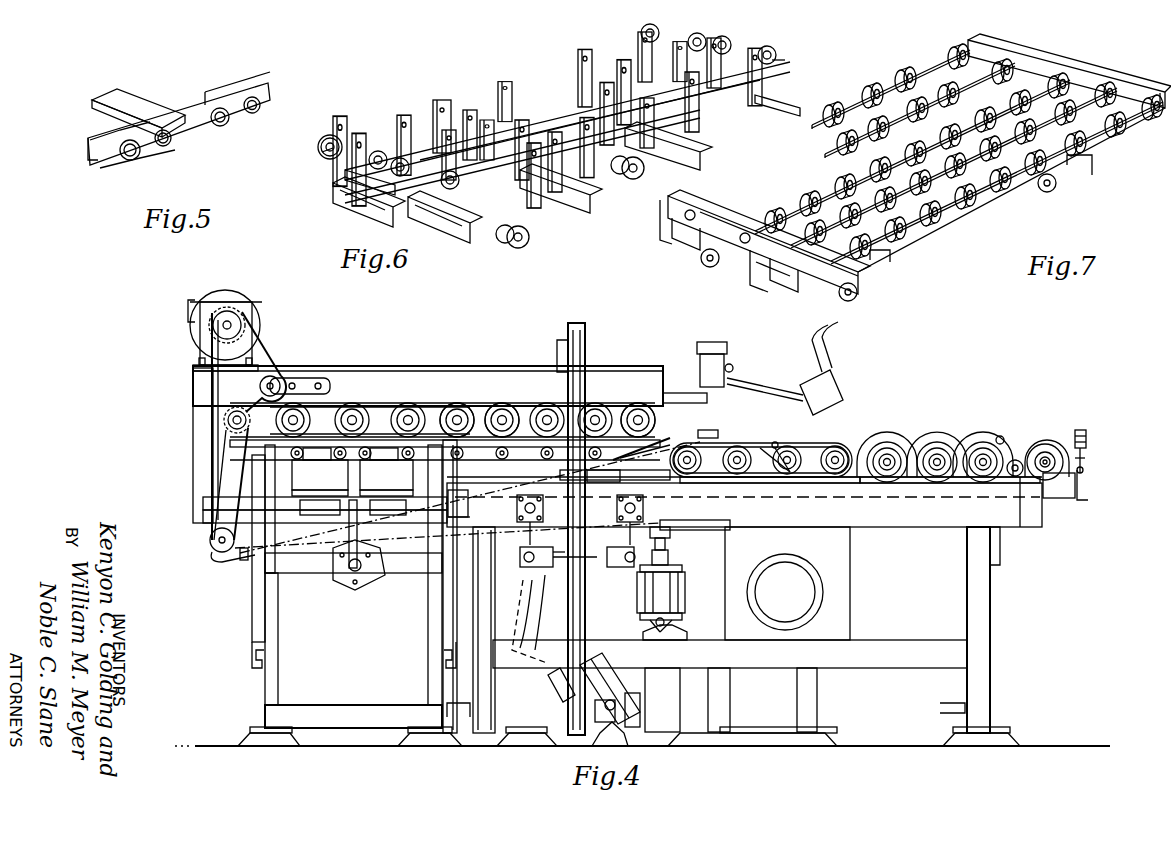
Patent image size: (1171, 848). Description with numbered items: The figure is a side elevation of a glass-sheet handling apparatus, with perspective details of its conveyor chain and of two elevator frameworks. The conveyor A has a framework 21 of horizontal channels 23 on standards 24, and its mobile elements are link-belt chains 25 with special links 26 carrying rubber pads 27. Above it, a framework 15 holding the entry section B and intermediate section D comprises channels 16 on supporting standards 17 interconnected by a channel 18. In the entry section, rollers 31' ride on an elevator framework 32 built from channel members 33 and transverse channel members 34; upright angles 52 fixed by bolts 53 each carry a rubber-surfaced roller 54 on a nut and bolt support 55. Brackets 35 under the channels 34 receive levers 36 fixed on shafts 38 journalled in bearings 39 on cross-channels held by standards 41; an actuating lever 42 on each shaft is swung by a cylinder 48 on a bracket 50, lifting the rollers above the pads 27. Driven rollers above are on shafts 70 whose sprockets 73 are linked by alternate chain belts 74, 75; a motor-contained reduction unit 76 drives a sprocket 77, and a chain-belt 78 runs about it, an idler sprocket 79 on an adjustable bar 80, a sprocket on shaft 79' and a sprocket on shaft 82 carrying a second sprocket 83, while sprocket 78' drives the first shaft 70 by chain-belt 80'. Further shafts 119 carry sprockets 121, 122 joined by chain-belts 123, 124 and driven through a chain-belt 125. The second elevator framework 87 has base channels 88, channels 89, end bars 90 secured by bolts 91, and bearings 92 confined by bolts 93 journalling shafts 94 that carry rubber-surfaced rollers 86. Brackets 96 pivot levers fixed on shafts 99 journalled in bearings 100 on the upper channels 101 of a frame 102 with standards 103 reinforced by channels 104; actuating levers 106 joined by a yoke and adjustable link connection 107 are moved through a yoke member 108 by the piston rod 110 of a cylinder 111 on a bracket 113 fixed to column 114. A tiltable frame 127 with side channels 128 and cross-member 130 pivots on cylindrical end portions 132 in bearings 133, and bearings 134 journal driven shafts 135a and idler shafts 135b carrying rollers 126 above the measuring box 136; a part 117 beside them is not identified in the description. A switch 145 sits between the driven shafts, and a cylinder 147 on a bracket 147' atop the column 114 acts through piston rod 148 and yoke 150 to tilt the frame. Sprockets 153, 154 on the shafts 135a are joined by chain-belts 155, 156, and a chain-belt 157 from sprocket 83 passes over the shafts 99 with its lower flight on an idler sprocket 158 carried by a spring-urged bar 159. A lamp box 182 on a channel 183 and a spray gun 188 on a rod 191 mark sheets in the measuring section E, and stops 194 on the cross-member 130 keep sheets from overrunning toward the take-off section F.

In FIG. 5, the link-belt chains 25 is at (200, 130).
In FIG. 4, the link-belt chains 25 is at (458, 516).
In FIG. 5, the special links 26 is at (115, 126).
In FIG. 5, the pads 27 is at (137, 103).
In FIG. 6, the rollers 31' is at (330, 110).
In FIG. 6, the elevator framework 32 is at (442, 96).
In FIG. 4, the elevator framework 32 is at (225, 505).
In FIG. 6, the channel members 33 is at (350, 198).
In FIG. 6, the channel members 34 is at (540, 196).
In FIG. 6, the brackets 35 is at (522, 246).
In FIG. 6, the upright angles 52 is at (360, 138).
In FIG. 6, the bolts 53 is at (350, 180).
In FIG. 6, the rubber-surface ball-bearing roller 54 is at (340, 135).
In FIG. 4, the rubber-surface ball-bearing roller 54 is at (290, 452).
In FIG. 6, the nut and bolt support 55 is at (326, 153).
In FIG. 7, the rubber-surfaced rollers 86 is at (840, 102).
In FIG. 4, the rubber-surfaced rollers 86 is at (548, 436).
In FIG. 7, the framework 87 is at (985, 255).
In FIG. 4, the framework 87 is at (640, 455).
In FIG. 7, the base channels 88 is at (890, 258).
In FIG. 7, the channels 89 is at (685, 243).
In FIG. 7, the bars 90 is at (1158, 88).
In FIG. 4, the bars 90 is at (470, 485).
In FIG. 7, the bolts 91 is at (662, 213).
In FIG. 7, the bearings 92 is at (695, 210).
In FIG. 7, the bolts 93 is at (768, 276).
In FIG. 7, the shafts 94 is at (826, 152).
In FIG. 7, the brackets 96 is at (852, 300).
In FIG. 4, the framework 15 is at (470, 366).
In FIG. 4, the channels 16 is at (412, 366).
In FIG. 4, the supporting standards 17 is at (585, 598).
In FIG. 4, the channel 18 is at (565, 336).
In FIG. 4, the framework 21 is at (265, 683).
In FIG. 4, the channels 23 is at (252, 655).
In FIG. 4, the standards 24 is at (278, 662).
In FIG. 4, the levers 36 is at (322, 515).
In FIG. 4, the shafts 38 is at (300, 496).
In FIG. 4, the bearings 39 is at (225, 520).
In FIG. 4, the standards 41 is at (265, 620).
In FIG. 4, the actuating lever 42 is at (358, 537).
In FIG. 4, the cylinder 48 is at (355, 590).
In FIG. 4, the bracket 50 is at (290, 565).
In FIG. 4, the shafts 70 is at (412, 410).
In FIG. 4, the sprockets 73 is at (300, 408).
In FIG. 4, the chain belts 74 is at (330, 404).
In FIG. 4, the chain belts 75 is at (392, 404).
In FIG. 4, the motor-contained reduction unit 76 is at (237, 300).
In FIG. 4, the sprocket 77 is at (232, 325).
In FIG. 4, the chain-belt 78 is at (231, 426).
In FIG. 4, the sprocket 78' is at (204, 423).
In FIG. 4, the idler sprocket 79 is at (285, 368).
In FIG. 4, the shaft 79' is at (206, 434).
In FIG. 4, the adjustable bar 80 is at (309, 360).
In FIG. 4, the chain-belt 80' is at (207, 484).
In FIG. 4, the shaft 82 is at (212, 543).
In FIG. 4, the second sprocket 83 is at (228, 560).
In FIG. 4, the shafts 99 is at (543, 499).
In FIG. 4, the bearings 100 is at (543, 513).
In FIG. 4, the upper channels 101 is at (860, 527).
In FIG. 4, the frame 102 is at (920, 530).
In FIG. 4, the standards 103 is at (480, 700).
In FIG. 4, the channels 104 is at (443, 580).
In FIG. 4, the actuating lever 106 is at (618, 567).
In FIG. 4, the yoke and adjustable link connection 107 is at (560, 562).
In FIG. 4, the yoke member 108 is at (545, 670).
In FIG. 4, the piston rod 110 is at (560, 700).
In FIG. 4, the cylinder 111 is at (605, 690).
In FIG. 4, the bracket 113 is at (640, 705).
In FIG. 4, the fixed column 114 is at (670, 685).
In FIG. 4, the pin 117 is at (992, 429).
In FIG. 4, the shafts 119 is at (500, 404).
In FIG. 4, the sprocket 121 is at (640, 410).
In FIG. 4, the sprocket 122 is at (468, 404).
In FIG. 4, the chain-belts 123 is at (545, 410).
In FIG. 4, the chain-belts 124 is at (500, 410).
In FIG. 4, the chain-belt 125 is at (448, 404).
In FIG. 4, the rubber-surfaced rollers 126 is at (895, 440).
In FIG. 4, the tiltable frame 127 is at (880, 440).
In FIG. 4, the side channels 128 is at (1055, 490).
In FIG. 4, the structural member 130 is at (1085, 500).
In FIG. 4, the cylindrical end portions 132 is at (1016, 460).
In FIG. 4, the bearings 133 is at (1020, 510).
In FIG. 4, the bearings 134 is at (930, 445).
In FIG. 4, the driven shafts 135a is at (790, 483).
In FIG. 4, the idler shafts 135b is at (1050, 450).
In FIG. 4, the box 136 is at (828, 608).
In FIG. 4, the switch 145 is at (775, 442).
In FIG. 4, the cylinder 147 is at (642, 595).
In FIG. 4, the bracket 147' is at (690, 627).
In FIG. 4, the piston rod 148 is at (668, 560).
In FIG. 4, the yoke 150 is at (668, 548).
In FIG. 4, the sprockets 153 is at (840, 448).
In FIG. 4, the sprocket 154 is at (745, 460).
In FIG. 4, the chain-belts 155 is at (740, 445).
In FIG. 4, the chain-belts 156 is at (765, 478).
In FIG. 4, the chain-belt 157 is at (703, 440).
In FIG. 4, the idler sprocket 158 is at (672, 532).
In FIG. 4, the bar 159 is at (735, 527).
In FIG. 4, the lamp box 182 is at (728, 355).
In FIG. 4, the channel 183 is at (680, 393).
In FIG. 4, the spray gun 188 is at (828, 390).
In FIG. 4, the rod 191 is at (755, 382).
In FIG. 4, the stops 194 is at (1083, 422).
In FIG. 4, the conveyor A is at (240, 620).
In FIG. 4, the entry section B is at (400, 366).
In FIG. 4, the intermediate section D is at (622, 400).
In FIG. 4, the weighing or measuring section E is at (765, 412).
In FIG. 4, the take-off section F is at (947, 425).